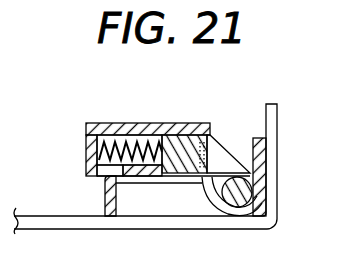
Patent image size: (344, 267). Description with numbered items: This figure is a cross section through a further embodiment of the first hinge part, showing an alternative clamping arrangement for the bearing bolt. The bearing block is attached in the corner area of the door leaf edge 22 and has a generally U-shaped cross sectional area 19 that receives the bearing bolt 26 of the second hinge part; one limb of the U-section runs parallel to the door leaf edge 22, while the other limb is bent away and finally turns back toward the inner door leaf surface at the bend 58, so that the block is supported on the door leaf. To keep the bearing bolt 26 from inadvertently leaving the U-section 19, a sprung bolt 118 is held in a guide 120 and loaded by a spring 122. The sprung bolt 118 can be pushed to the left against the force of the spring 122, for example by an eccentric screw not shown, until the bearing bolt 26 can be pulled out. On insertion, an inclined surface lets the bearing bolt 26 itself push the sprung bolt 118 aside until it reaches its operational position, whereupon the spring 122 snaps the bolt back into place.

The door leaf edge 22 is at (274, 126).
The guide 120 is at (140, 124).
The spring 122 is at (108, 128).
The sprung bolt 118 is at (229, 147).
The bend 58 is at (105, 186).
The bearing bolt 26 is at (242, 200).
The U-shaped cross sectional area 19 is at (259, 207).